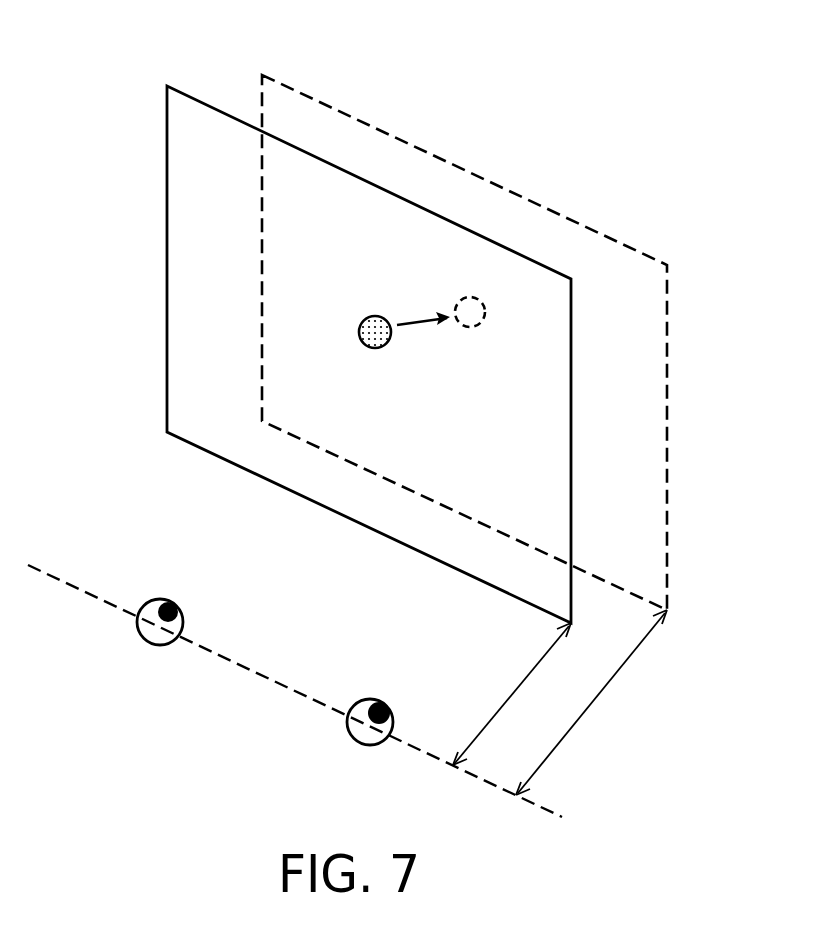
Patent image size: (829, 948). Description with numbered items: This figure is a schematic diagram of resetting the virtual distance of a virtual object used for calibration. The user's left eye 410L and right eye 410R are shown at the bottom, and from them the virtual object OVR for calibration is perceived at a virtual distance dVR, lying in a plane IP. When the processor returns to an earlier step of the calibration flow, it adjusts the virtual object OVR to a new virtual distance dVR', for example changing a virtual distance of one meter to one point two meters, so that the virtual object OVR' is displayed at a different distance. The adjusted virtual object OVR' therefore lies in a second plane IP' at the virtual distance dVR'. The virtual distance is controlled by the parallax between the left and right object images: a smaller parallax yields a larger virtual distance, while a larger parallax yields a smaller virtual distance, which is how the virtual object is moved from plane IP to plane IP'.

The left eye 410L is at (141, 645).
The right eye 410R is at (351, 742).
The plane IP is at (369, 329).
The plane IP' is at (464, 317).
The virtual object OVR is at (375, 351).
The virtual object OVR' is at (474, 333).
The virtual distance dVR is at (512, 694).
The virtual distance dVR' is at (591, 702).